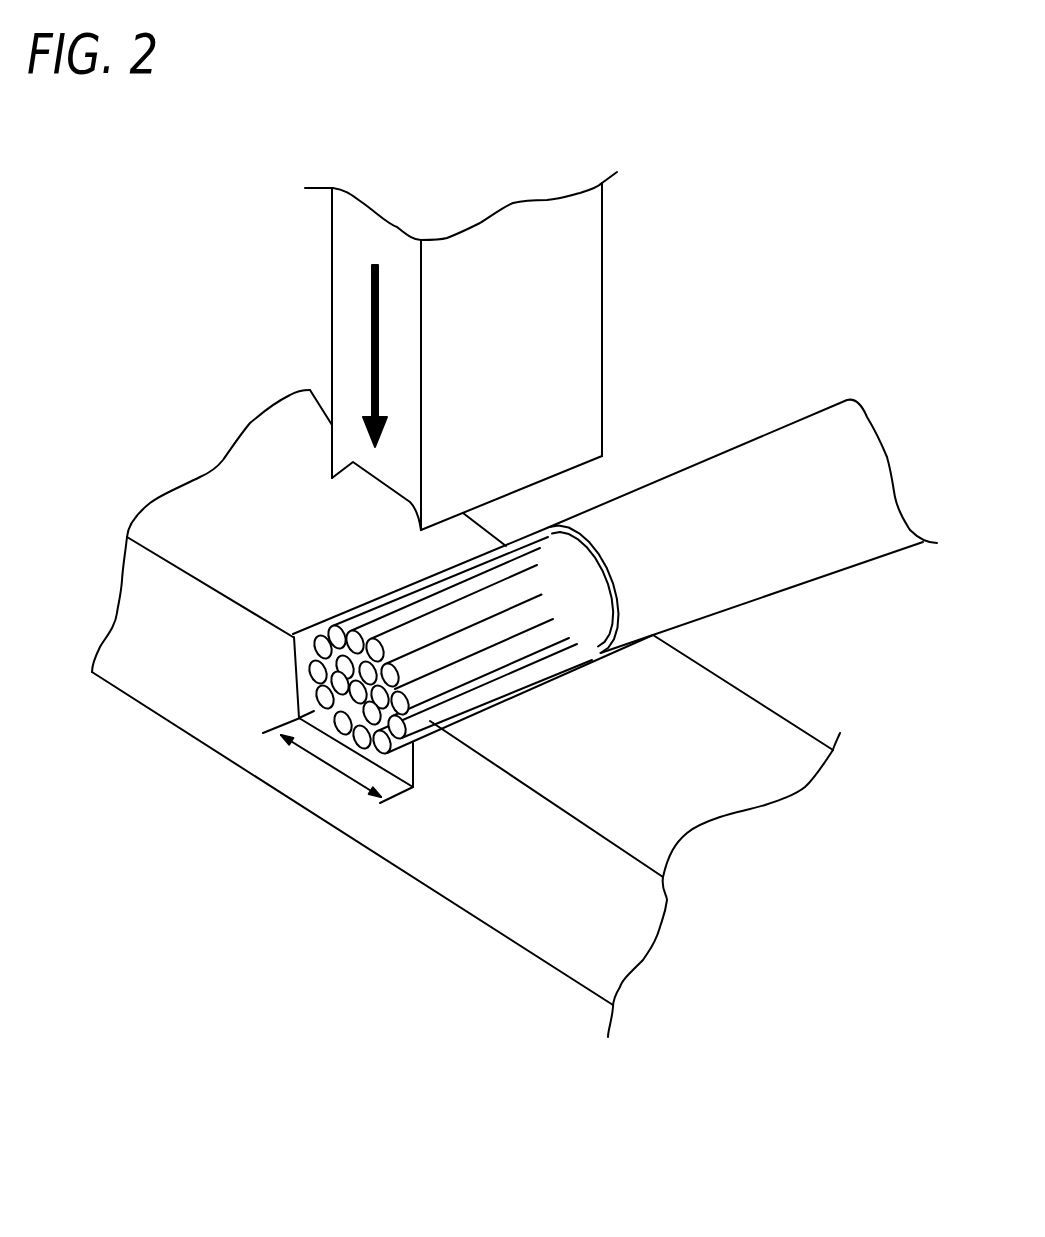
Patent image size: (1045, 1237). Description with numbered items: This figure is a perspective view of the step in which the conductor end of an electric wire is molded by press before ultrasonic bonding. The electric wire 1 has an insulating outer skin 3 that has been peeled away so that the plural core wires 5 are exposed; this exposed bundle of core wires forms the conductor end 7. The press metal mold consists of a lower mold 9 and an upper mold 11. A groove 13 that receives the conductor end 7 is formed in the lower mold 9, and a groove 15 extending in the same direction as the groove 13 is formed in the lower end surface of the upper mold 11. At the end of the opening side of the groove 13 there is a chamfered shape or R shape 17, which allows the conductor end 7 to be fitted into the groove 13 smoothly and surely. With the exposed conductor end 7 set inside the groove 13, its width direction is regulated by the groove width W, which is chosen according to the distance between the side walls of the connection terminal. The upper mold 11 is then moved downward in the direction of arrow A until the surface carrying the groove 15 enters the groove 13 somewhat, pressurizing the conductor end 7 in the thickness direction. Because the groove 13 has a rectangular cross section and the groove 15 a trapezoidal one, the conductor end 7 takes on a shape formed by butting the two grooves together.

The electric wire 1 is at (828, 605).
The insulating outer skin 3 is at (705, 460).
The core wires 5 is at (472, 650).
The conductor end 7 is at (455, 567).
The lower mold 9 is at (262, 782).
The upper mold 11 is at (603, 268).
The groove 13 is at (297, 690).
The groove 15 is at (378, 480).
The chamfered shape or R shape 17 is at (310, 634).
The arrow A is at (372, 288).
The groove width W is at (338, 760).